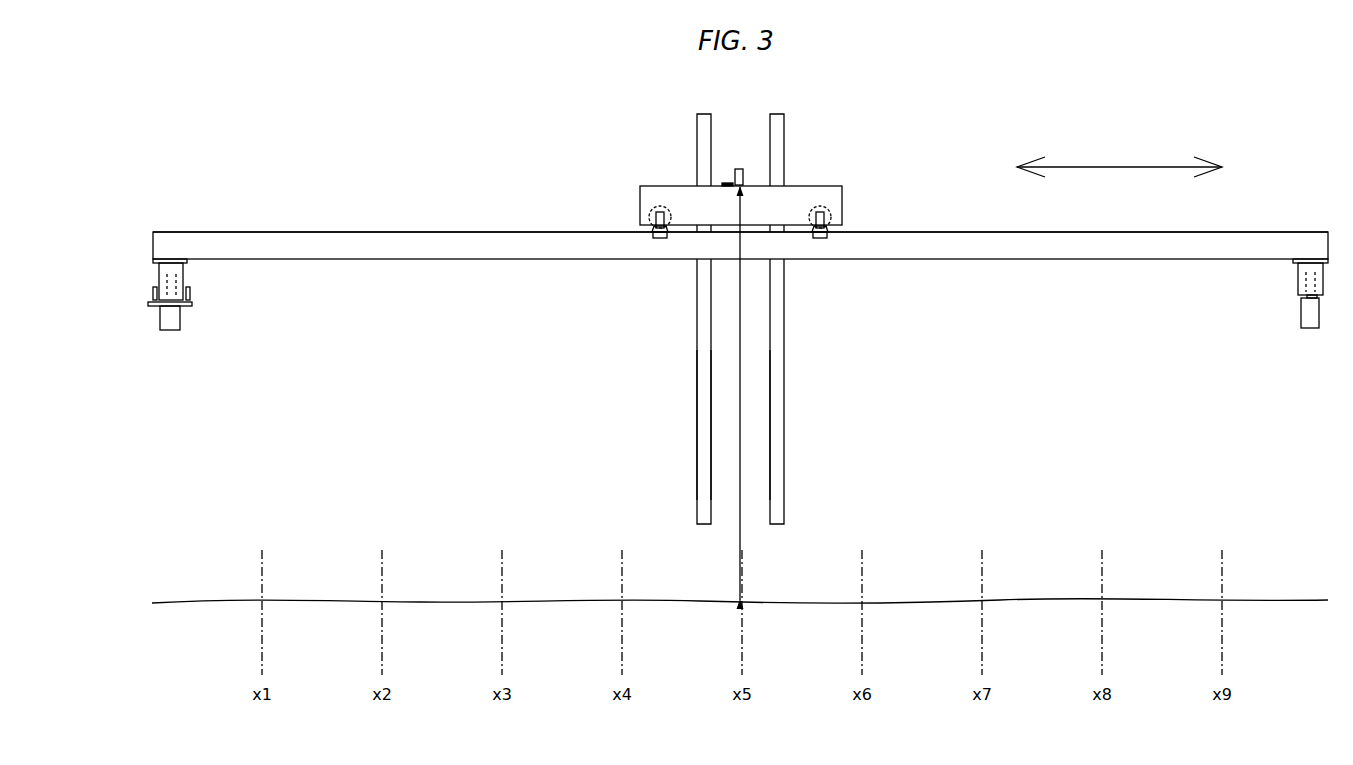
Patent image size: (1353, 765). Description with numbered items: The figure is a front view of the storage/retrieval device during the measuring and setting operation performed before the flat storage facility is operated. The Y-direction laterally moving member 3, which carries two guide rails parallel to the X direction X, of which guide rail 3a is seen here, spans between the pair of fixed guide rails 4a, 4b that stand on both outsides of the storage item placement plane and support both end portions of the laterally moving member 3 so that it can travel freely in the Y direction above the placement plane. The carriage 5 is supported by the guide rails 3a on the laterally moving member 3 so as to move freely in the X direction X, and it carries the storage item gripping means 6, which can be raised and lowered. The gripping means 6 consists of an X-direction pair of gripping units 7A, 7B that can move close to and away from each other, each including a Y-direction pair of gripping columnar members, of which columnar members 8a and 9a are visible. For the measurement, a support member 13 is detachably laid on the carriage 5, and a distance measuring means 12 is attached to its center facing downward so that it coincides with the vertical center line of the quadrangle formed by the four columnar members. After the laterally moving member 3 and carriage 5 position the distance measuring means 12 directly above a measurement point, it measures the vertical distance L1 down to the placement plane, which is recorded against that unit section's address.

The Y-direction laterally moving member 3 is at (380, 231).
The guide rail 3a is at (583, 245).
The fixed guide rail 4a is at (170, 331).
The fixed guide rail 4b is at (1308, 311).
The carriage 5 is at (832, 195).
The storage item gripping means 6 is at (693, 394).
The gripping unit 7A is at (695, 426).
The gripping unit 7B is at (787, 413).
The gripping columnar member 8a is at (703, 465).
The gripping columnar member 9a is at (780, 467).
The distance measuring means 12 is at (748, 176).
The support member 13 is at (729, 183).
The distance L1 is at (754, 393).
The X direction X is at (1119, 160).